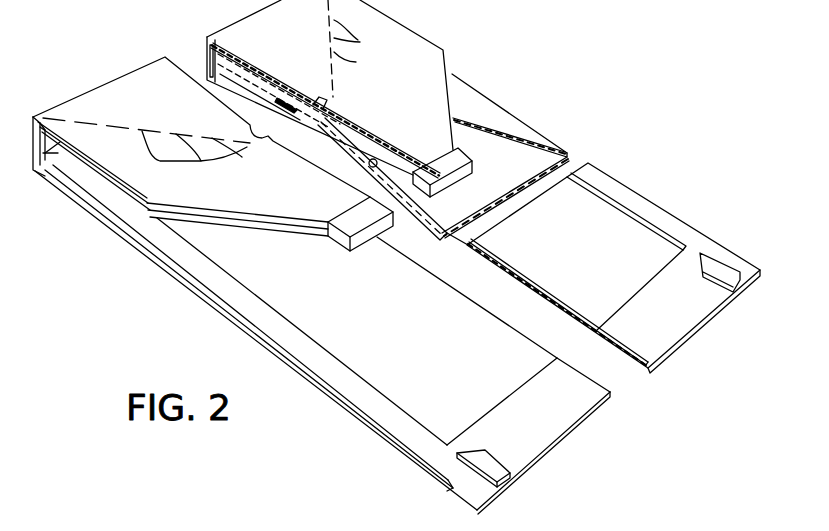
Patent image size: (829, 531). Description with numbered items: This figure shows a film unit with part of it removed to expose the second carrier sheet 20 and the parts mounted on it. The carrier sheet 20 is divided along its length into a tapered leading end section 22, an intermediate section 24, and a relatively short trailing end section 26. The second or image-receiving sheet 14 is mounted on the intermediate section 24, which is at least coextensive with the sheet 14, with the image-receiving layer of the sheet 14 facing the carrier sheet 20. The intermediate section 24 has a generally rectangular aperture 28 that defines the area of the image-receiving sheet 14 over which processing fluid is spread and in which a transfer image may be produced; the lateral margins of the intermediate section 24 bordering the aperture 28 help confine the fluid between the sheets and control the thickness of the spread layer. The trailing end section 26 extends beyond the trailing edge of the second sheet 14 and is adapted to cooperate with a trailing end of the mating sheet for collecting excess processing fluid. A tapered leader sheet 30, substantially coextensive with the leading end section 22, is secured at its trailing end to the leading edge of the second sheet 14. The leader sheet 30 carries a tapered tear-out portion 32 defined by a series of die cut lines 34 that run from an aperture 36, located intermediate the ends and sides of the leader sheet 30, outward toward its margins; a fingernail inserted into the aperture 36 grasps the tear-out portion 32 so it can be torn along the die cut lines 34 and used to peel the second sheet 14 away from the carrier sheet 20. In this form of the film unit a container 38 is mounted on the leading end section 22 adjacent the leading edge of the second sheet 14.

The second or image-receiving sheet 14 is at (417, 356).
The second carrier sheet 20 is at (384, 419).
The tapered leading end section 22 is at (385, 166).
The intermediate section 24 is at (226, 291).
The trailing end section 26 is at (663, 342).
The aperture 28 is at (294, 327).
The tapered leader sheet 30 is at (377, 99).
The tapered tear-out portion 32 is at (280, 48).
The die cut lines 34 is at (360, 42).
The aperture 36 is at (328, 108).
The container 38 is at (252, 86).